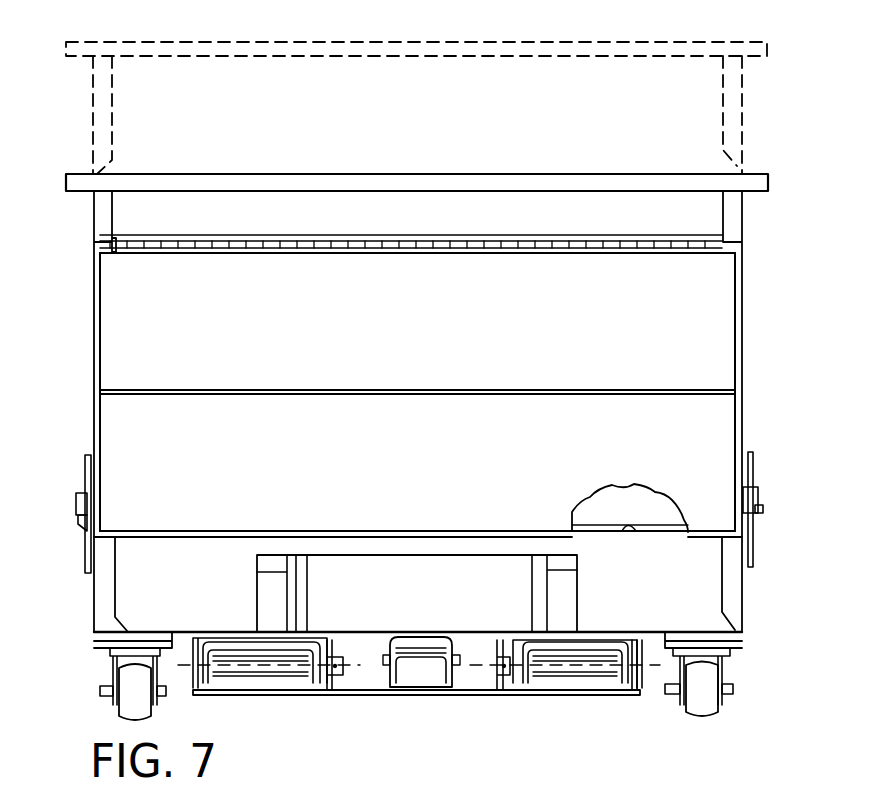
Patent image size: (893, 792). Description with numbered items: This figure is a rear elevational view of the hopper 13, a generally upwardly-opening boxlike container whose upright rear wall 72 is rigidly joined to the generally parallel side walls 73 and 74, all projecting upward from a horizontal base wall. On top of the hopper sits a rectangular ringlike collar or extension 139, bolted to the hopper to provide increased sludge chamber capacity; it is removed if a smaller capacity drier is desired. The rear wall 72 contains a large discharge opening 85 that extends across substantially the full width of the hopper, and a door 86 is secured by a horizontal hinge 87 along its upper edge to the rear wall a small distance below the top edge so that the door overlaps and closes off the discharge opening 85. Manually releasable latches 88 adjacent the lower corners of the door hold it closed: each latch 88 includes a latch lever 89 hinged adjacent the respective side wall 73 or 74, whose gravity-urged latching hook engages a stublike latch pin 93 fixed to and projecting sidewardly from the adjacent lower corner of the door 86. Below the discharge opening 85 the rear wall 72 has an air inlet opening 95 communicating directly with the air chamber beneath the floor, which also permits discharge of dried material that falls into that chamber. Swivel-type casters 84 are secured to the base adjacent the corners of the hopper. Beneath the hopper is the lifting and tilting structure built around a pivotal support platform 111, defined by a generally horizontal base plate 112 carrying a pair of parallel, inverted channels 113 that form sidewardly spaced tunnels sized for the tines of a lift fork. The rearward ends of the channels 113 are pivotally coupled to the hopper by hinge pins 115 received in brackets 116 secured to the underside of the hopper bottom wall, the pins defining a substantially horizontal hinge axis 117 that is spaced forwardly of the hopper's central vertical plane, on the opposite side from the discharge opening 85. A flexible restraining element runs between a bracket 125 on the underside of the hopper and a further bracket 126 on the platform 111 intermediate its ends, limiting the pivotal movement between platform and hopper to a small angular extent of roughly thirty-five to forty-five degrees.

The hopper 13 is at (405, 462).
The rear wall 72 is at (125, 214).
The side wall 73 is at (92, 360).
The side wall 74 is at (743, 282).
The swivel-type roller or caster 84 is at (705, 697).
The discharge opening 85 is at (644, 520).
The door 86 is at (718, 327).
The horizontal hinge 87 is at (668, 238).
The manually releasable latch 88 is at (58, 506).
The latch lever 89 is at (86, 470).
The latch pin 93 is at (77, 522).
The air inlet opening 95 is at (405, 550).
The pivotal support platform 111 is at (430, 660).
The base plate 112 is at (480, 690).
The channel 113 is at (313, 676).
The hinge pin 115 is at (238, 665).
The bracket 116 is at (337, 640).
The hinge axis 117 is at (488, 655).
The bracket 125 is at (397, 652).
The bracket 126 is at (452, 678).
The rectangular ringlike collar or extension 139 is at (675, 100).